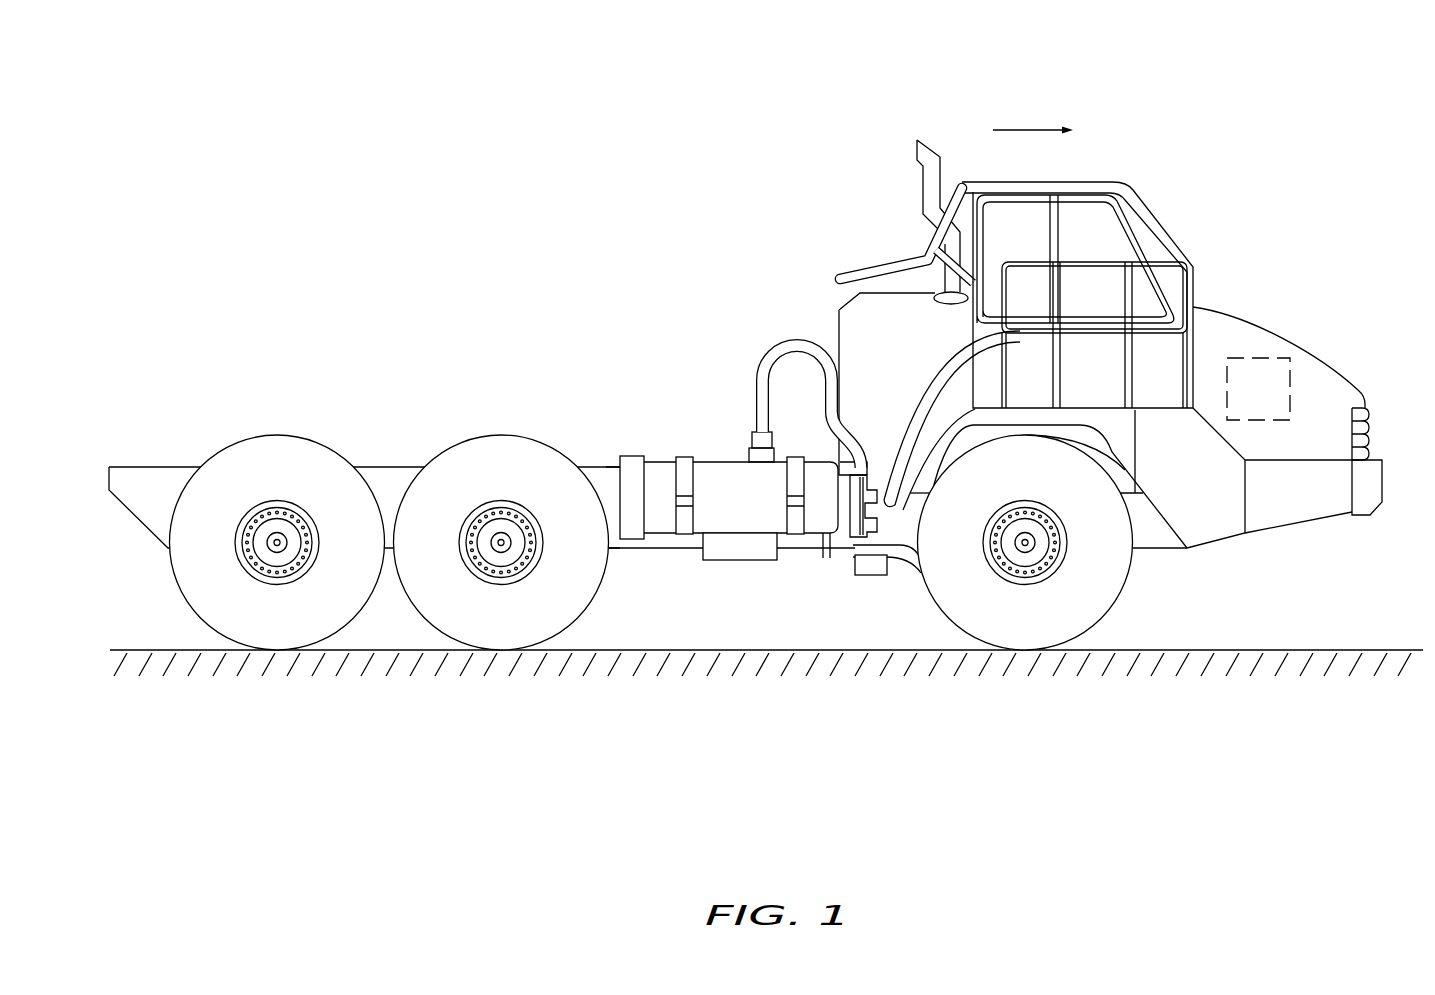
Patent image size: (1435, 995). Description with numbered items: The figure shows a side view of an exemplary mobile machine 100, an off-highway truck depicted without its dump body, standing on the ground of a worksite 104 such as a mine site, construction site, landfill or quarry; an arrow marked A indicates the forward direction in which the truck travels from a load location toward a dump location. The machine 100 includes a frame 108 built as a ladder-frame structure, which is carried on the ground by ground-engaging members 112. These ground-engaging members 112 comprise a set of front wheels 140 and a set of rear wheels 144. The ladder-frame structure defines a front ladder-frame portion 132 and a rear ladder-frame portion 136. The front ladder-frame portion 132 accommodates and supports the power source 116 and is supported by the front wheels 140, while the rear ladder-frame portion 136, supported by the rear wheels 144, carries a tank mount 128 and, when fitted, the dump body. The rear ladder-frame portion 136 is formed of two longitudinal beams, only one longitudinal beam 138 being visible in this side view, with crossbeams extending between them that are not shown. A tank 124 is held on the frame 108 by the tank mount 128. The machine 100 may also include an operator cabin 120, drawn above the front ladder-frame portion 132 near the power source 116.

The mobile machine 100 is at (768, 361).
The worksite 104 is at (1352, 650).
The frame 108 is at (393, 467).
The ground-engaging members 112 is at (652, 542).
The power source 116 is at (1289, 350).
The operator cabin 120 is at (1161, 223).
The tank 124 is at (727, 453).
The tank mount 128 is at (683, 547).
The front ladder-frame portion 132 is at (900, 570).
The rear ladder-frame portion 136 is at (598, 467).
The longitudinal beam 138 is at (594, 466).
The set of front wheels 140 is at (1100, 620).
The set of rear wheels 144 is at (196, 620).